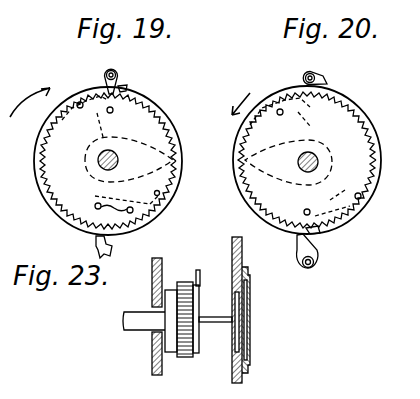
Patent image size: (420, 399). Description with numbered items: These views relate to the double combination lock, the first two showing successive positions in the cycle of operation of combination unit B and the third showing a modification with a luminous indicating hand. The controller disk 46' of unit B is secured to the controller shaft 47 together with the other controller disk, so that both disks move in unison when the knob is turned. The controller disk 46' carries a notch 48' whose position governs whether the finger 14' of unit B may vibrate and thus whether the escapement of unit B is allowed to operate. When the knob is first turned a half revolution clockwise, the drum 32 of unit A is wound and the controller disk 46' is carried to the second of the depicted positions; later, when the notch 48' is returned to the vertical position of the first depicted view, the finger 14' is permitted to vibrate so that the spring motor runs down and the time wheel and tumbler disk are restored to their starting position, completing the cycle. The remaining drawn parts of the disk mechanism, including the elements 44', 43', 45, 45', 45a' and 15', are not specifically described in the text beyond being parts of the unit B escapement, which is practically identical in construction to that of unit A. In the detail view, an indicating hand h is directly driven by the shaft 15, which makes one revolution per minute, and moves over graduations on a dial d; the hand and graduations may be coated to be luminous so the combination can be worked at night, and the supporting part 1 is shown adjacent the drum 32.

In FIG. 19, the finger 14' is at (64, 86).
In FIG. 20, the finger 14' is at (297, 84).
In FIG. 19, the notch 48' is at (151, 80).
In FIG. 20, the notch 48' is at (336, 242).
In FIG. 19, the pin 45 is at (154, 105).
In FIG. 19, the cam 44' is at (117, 139).
In FIG. 20, the cam 44' is at (291, 141).
In FIG. 19, the controller disk 46' is at (91, 161).
In FIG. 20, the controller disk 46' is at (316, 158).
In FIG. 19, the controller shaft 47 is at (99, 153).
In FIG. 19, the ratchet wheel 43' is at (108, 161).
In FIG. 20, the ratchet wheel 43' is at (307, 160).
In FIG. 19, the pawl tab 45a' is at (97, 225).
In FIG. 20, the pin 45' is at (314, 203).
In FIG. 20, the lever 15' is at (333, 260).
In FIG. 23, the frame plate 1 is at (232, 250).
In FIG. 23, the shaft 15 is at (166, 342).
In FIG. 23, the drum 32 is at (170, 355).
In FIG. 23, the indicating hand h is at (250, 302).
In FIG. 23, the dial d is at (250, 348).